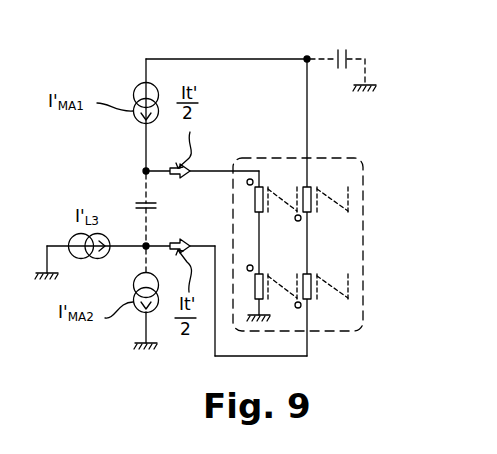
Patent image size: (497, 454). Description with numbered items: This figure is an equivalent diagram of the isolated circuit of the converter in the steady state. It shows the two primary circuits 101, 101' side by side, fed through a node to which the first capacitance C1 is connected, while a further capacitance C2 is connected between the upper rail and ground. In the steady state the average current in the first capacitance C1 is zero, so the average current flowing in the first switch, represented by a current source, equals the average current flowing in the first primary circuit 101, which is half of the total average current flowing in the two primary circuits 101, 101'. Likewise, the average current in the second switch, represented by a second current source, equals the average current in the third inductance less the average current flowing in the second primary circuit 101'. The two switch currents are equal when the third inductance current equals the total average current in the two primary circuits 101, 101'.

The first primary circuit 101 is at (240, 246).
The second primary circuit 101' is at (358, 247).
The first capacitance C1 is at (132, 223).
The capacitor C2 is at (343, 59).